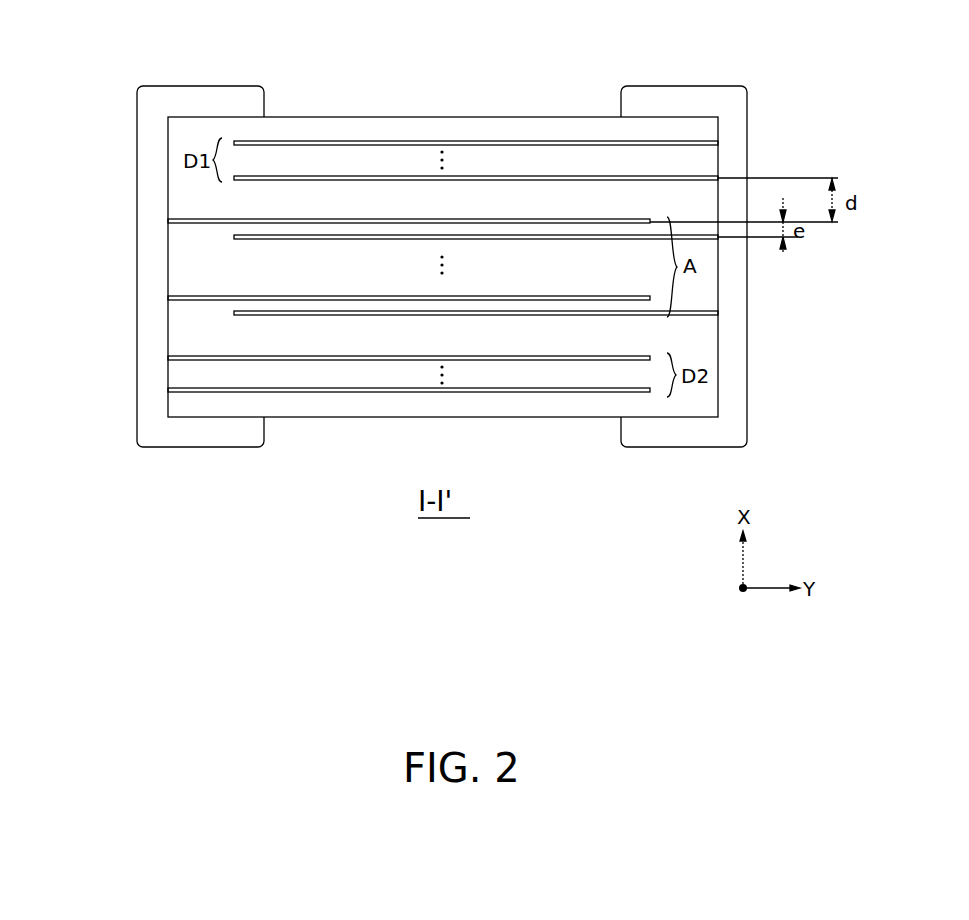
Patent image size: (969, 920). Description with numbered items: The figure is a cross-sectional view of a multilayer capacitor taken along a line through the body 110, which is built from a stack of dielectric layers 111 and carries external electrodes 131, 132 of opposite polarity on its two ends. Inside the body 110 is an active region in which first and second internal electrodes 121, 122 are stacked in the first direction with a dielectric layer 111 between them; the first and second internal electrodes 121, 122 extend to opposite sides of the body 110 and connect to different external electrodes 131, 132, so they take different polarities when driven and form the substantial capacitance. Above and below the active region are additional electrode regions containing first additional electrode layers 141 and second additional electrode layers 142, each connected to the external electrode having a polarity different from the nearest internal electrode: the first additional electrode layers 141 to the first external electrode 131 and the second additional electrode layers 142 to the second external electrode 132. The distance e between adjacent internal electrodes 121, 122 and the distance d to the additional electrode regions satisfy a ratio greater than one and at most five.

The body 110 is at (489, 116).
The dielectric layer 111 is at (236, 228).
The first internal electrode 121 is at (700, 239).
The second internal electrode 122 is at (168, 222).
The first external electrode 131 is at (735, 97).
The second external electrode 132 is at (147, 110).
The first additional electrode layer 141 is at (715, 143).
The second additional electrode layer 142 is at (168, 358).